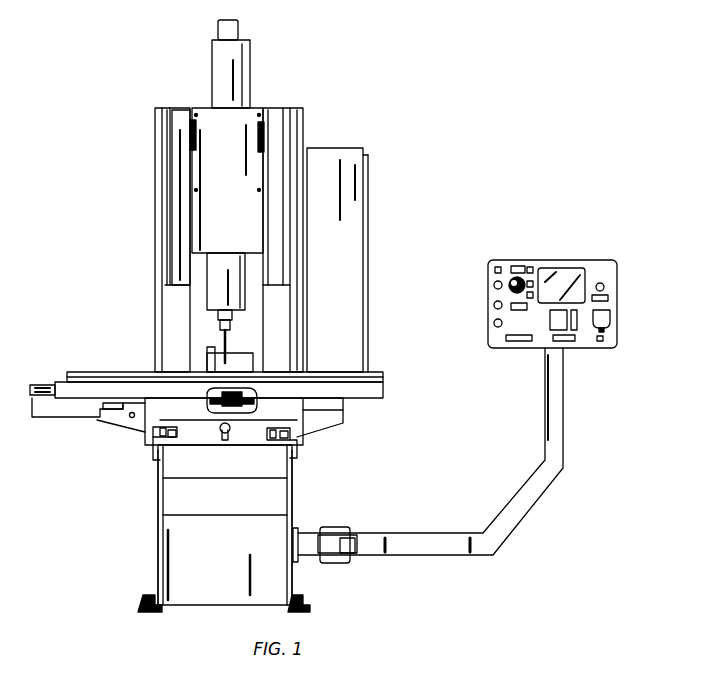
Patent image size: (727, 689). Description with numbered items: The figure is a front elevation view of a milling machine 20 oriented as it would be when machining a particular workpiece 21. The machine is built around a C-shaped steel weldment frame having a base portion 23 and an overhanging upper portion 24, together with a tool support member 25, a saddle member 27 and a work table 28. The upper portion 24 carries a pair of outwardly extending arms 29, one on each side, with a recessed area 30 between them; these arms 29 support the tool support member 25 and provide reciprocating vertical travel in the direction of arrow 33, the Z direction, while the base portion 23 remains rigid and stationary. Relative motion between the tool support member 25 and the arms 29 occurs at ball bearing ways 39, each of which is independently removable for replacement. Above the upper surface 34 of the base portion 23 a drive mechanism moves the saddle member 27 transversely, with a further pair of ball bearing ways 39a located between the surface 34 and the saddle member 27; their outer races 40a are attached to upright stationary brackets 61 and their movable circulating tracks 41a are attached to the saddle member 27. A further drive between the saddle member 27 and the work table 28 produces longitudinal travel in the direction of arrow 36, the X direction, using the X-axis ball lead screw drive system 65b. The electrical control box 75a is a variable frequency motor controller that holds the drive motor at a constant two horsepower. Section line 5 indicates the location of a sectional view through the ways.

The milling machine 20 is at (412, 148).
The workpiece 21 is at (242, 363).
The base portion 23 is at (158, 563).
The overhanging upper portion 24 is at (333, 132).
The tool support member 25 is at (190, 218).
The saddle member 27 is at (143, 430).
The work table 28 is at (97, 372).
The outwardly extending arms 29 is at (165, 108).
The recessed area 30 is at (253, 107).
The arrow 33 is at (433, 232).
The upper surface 34 is at (242, 457).
The arrow 36 is at (413, 433).
The ball bearing way 39 is at (173, 138).
The ball bearing ways 39a is at (152, 468).
The outer races 40a is at (177, 440).
The movable circulating tracks 41a is at (153, 435).
The section line 5 is at (175, 167).
The upright stationary brackets 61 is at (178, 436).
The X-axis drive system 65b is at (217, 395).
The electrical control box 75a is at (350, 290).